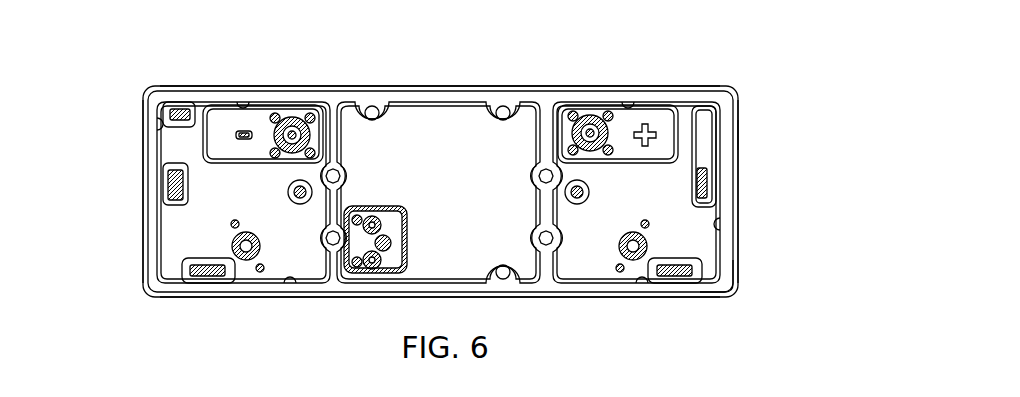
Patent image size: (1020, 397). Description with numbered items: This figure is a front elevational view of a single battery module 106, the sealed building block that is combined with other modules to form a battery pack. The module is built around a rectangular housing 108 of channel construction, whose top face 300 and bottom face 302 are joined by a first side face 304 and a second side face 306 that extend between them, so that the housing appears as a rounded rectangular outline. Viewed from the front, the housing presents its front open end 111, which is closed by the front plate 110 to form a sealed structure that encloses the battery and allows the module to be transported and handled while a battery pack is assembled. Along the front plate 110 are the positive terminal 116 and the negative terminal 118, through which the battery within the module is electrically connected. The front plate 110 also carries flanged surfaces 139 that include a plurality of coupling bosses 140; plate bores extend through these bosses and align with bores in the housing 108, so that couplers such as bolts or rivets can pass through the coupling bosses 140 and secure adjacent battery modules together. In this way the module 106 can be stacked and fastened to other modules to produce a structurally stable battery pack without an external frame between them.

The battery module 106 is at (783, 133).
The housing 108 is at (150, 94).
The front plate 110 is at (487, 180).
The front open end 111 is at (736, 262).
The positive terminal 116 is at (590, 128).
The negative terminal 118 is at (294, 130).
The flanged surfaces 139 is at (244, 110).
The coupling bosses 140 is at (212, 108).
The top face 300 is at (511, 87).
The bottom face 302 is at (562, 297).
The first side face 304 is at (143, 171).
The second side face 306 is at (739, 125).